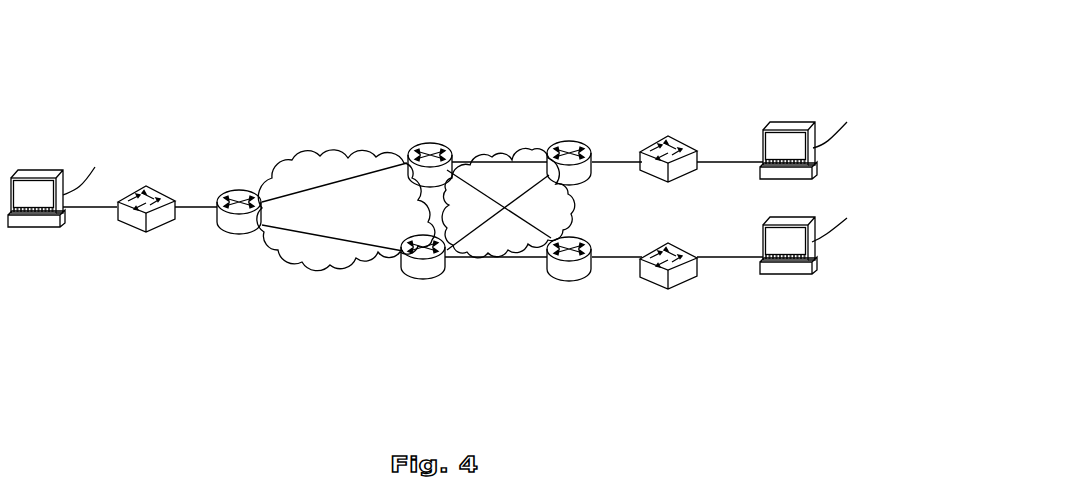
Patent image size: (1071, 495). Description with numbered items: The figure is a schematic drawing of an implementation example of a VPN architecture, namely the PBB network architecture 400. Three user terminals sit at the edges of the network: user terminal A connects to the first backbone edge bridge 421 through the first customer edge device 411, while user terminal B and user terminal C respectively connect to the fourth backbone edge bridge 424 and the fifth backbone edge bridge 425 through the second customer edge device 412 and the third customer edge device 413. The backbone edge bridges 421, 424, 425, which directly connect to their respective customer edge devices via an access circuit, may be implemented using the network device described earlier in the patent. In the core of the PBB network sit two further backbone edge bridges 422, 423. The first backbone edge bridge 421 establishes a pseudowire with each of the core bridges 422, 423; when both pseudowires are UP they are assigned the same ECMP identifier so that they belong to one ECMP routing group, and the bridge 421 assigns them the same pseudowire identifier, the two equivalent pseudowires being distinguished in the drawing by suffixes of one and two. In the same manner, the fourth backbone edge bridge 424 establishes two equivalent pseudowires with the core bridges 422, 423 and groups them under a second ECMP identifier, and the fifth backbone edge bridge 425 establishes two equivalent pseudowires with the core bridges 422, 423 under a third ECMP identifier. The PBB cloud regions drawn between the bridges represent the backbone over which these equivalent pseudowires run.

The PBB network architecture 400 is at (742, 24).
The CE411 411 is at (147, 188).
The CE412 412 is at (683, 142).
The CE413 413 is at (717, 218).
The BEB421 421 is at (274, 160).
The BEB422 422 is at (483, 122).
The BEB423 423 is at (417, 280).
The BEB424 424 is at (608, 117).
The BEB425 425 is at (567, 282).